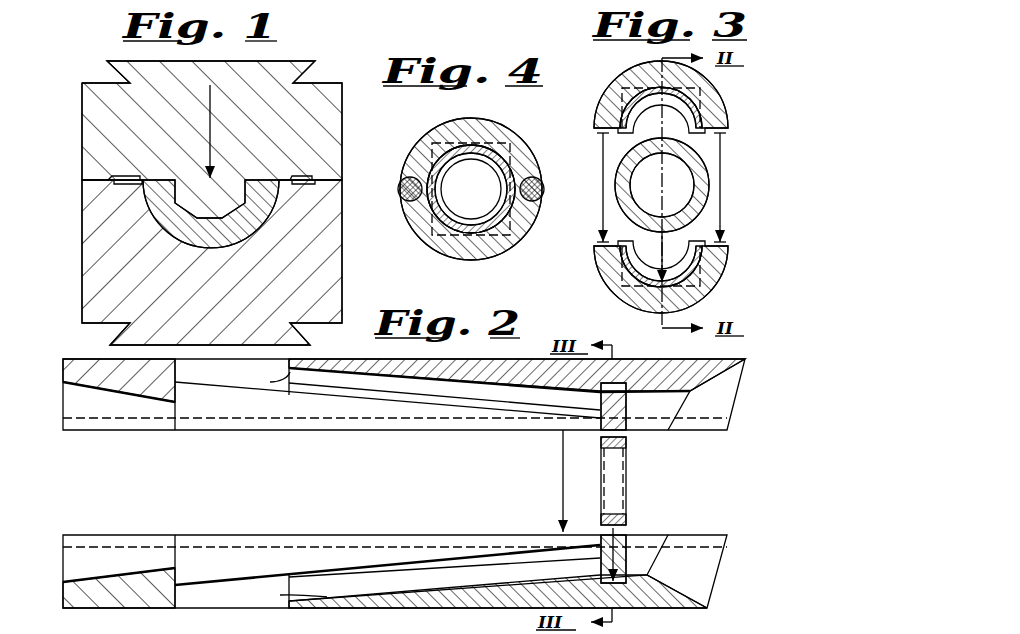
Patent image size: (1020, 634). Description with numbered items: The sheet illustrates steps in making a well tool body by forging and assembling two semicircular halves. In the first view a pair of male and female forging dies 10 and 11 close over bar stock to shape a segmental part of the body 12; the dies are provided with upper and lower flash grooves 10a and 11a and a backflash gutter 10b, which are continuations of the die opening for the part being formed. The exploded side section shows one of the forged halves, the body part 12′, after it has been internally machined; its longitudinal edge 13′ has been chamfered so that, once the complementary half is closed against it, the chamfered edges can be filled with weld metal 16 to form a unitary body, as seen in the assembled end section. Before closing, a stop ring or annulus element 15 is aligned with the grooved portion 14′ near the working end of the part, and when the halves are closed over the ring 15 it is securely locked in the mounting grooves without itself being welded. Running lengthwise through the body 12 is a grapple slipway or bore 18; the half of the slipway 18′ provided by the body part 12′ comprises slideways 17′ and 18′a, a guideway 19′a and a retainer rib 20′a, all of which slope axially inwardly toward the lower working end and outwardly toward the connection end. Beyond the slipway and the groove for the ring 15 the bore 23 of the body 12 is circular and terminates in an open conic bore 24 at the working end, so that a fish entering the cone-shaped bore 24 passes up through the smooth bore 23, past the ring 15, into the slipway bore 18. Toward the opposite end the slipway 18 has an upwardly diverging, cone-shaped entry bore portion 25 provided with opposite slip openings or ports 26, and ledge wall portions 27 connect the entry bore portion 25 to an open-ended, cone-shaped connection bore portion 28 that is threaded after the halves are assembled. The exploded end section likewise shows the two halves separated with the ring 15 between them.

In FIG. 1, the male forging die 10 is at (82, 122).
In FIG. 1, the upper flash groove 10a is at (132, 177).
In FIG. 1, the backflash gutter 10b is at (303, 176).
In FIG. 1, the female forging die 11 is at (82, 250).
In FIG. 1, the lower flash groove 11a is at (133, 185).
In FIG. 1, the body 12 is at (263, 215).
In FIG. 4, the body 12 is at (442, 124).
In FIG. 3, the body 12 is at (608, 88).
In FIG. 2, the body 12 is at (742, 387).
In FIG. 4, the segmental body part 12′ is at (483, 130).
In FIG. 3, the segmental body part 12′ is at (677, 115).
In FIG. 2, the segmental body part 12′ is at (303, 432).
In FIG. 3, the longitudinal edge 13′ is at (600, 130).
In FIG. 2, the longitudinal edge 13′ is at (438, 420).
In FIG. 3, the grooved portion 14′ is at (682, 128).
In FIG. 2, the grooved portion 14′ is at (557, 398).
In FIG. 3, the stop ring 15 is at (703, 185).
In FIG. 2, the stop ring 15 is at (630, 478).
In FIG. 4, the weld metal 16 is at (398, 191).
In FIG. 2, the slideway 17′ is at (266, 380).
In FIG. 4, the grapple slipway 18 is at (440, 138).
In FIG. 3, the grapple slipway 18 is at (630, 72).
In FIG. 2, the grapple slipway 18 is at (490, 388).
In FIG. 4, the slipway half 18′ is at (438, 246).
In FIG. 2, the slideway 18′a is at (350, 377).
In FIG. 2, the guideway 19′a is at (302, 387).
In FIG. 2, the retainer rib 20′a is at (397, 402).
In FIG. 2, the bore 23 is at (635, 571).
In FIG. 2, the open conic bore 24 is at (712, 380).
In FIG. 2, the entry bore portion 25 is at (233, 560).
In FIG. 2, the slip openings 26 is at (273, 362).
In FIG. 4, the ledge wall portions 27 is at (448, 159).
In FIG. 3, the ledge wall portions 27 is at (627, 130).
In FIG. 2, the ledge wall portions 27 is at (177, 414).
In FIG. 4, the connection bore portion 28 is at (491, 208).
In FIG. 3, the connection bore portion 28 is at (650, 185).
In FIG. 2, the connection bore portion 28 is at (70, 400).